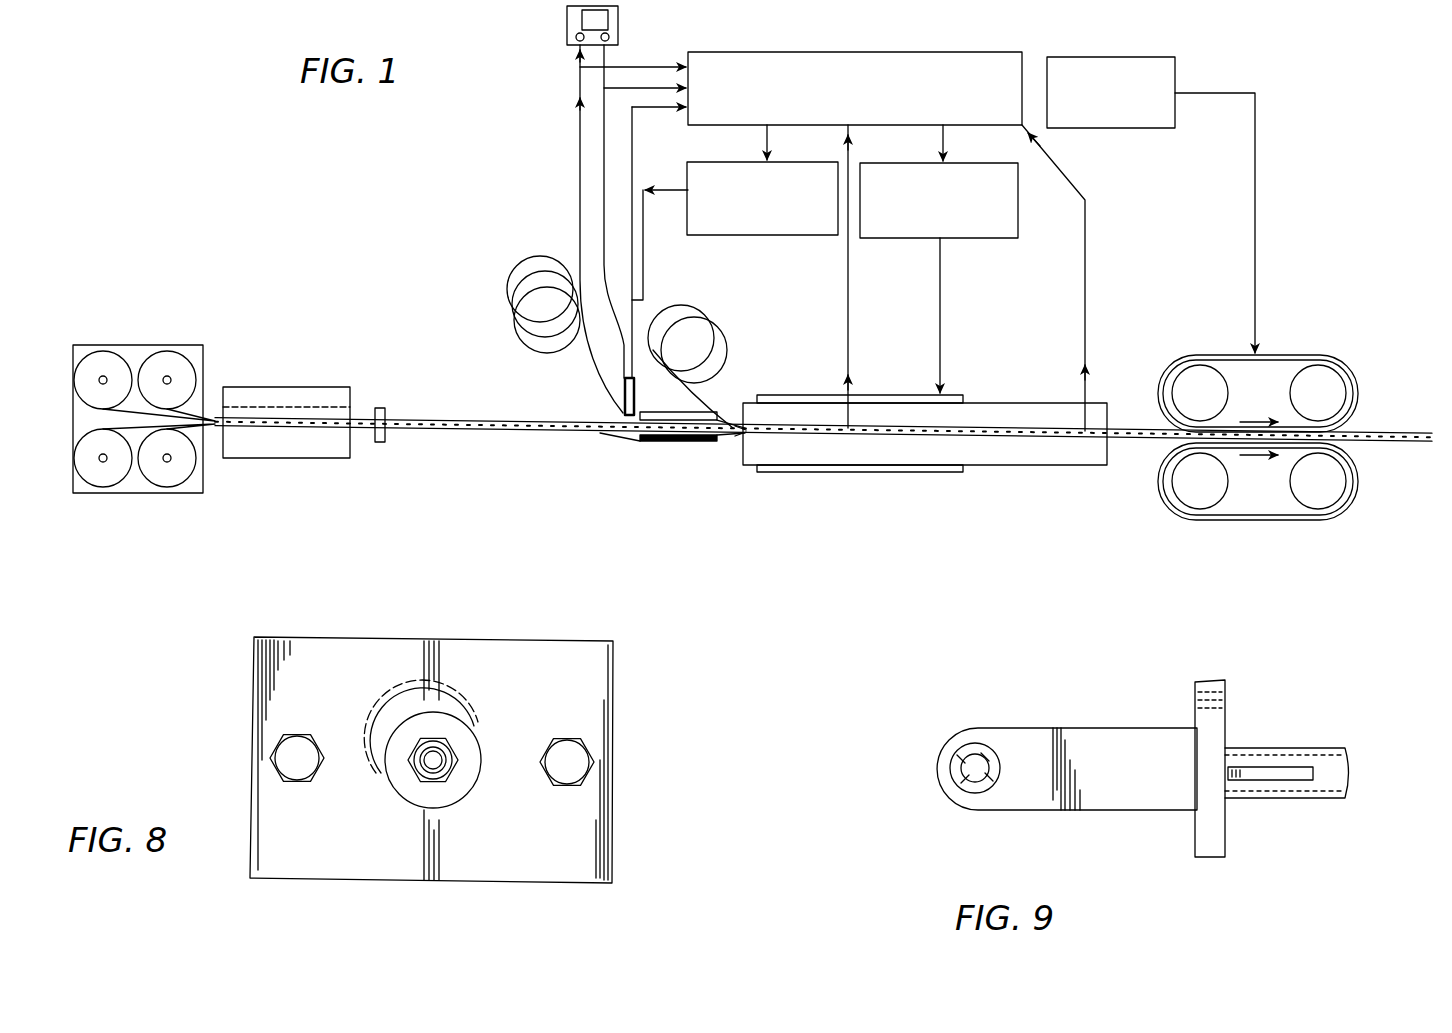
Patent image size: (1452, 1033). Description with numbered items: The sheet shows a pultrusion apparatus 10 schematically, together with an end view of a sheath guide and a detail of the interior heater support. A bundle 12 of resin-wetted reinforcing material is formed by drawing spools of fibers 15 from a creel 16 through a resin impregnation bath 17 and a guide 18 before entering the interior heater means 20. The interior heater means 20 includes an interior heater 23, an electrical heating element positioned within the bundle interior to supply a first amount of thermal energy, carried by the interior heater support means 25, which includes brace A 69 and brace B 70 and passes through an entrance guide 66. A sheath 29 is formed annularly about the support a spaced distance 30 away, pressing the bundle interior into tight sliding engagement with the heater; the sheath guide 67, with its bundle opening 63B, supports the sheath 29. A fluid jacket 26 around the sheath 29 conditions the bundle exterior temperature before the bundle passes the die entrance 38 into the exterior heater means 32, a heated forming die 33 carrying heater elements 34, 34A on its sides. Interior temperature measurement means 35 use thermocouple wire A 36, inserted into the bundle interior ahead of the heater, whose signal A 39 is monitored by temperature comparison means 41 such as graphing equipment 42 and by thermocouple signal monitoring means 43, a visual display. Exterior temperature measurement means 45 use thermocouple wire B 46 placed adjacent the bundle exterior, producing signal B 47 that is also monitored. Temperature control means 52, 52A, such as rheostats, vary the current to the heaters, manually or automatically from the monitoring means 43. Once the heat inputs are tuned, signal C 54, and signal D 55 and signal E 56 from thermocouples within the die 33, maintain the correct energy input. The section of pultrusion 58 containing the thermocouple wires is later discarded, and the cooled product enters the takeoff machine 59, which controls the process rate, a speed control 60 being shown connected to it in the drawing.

In FIG. 1, the pultrusion apparatus 10 is at (1337, 93).
In FIG. 1, the bundle 12 is at (464, 420).
In FIG. 1, the spools of fibers 15 is at (157, 487).
In FIG. 1, the creel 16 is at (147, 303).
In FIG. 1, the resin impregnation bath 17 is at (290, 387).
In FIG. 1, the guide 18 is at (383, 443).
In FIG. 1, the interior heater means 20 is at (601, 410).
In FIG. 1, the interior heater 23 is at (728, 441).
In FIG. 8, the interior heater 23 is at (455, 745).
In FIG. 8, the interior heater support means 25 is at (417, 780).
In FIG. 9, the interior heater support means 25 is at (1350, 727).
In FIG. 1, the fluid jacket 26 is at (679, 447).
In FIG. 1, the sheath 29 is at (640, 438).
In FIG. 8, the spaced distance 30 is at (421, 736).
In FIG. 1, the exterior heater means 32 is at (942, 479).
In FIG. 1, the heated forming die 33 is at (1047, 467).
In FIG. 1, the heater element 34 is at (783, 394).
In FIG. 1, the heater element 34A is at (853, 473).
In FIG. 1, the interior temperature measurement means 35 is at (450, 222).
In FIG. 1, the thermocouple wire A 36 is at (537, 258).
In FIG. 1, the furnace entrance 38 is at (752, 438).
In FIG. 1, the signal A 39 is at (579, 124).
In FIG. 1, the temperature comparison means 41 is at (562, 26).
In FIG. 1, the graphing equipment 42 is at (618, 23).
In FIG. 1, the thermocouple signal monitoring means 43 is at (978, 46).
In FIG. 1, the exterior temperature measurement means 45 is at (677, 290).
In FIG. 1, the thermocouple wire B 46 is at (705, 317).
In FIG. 1, the signal B 47 is at (620, 85).
In FIG. 1, the temperature control means 52 is at (806, 246).
In FIG. 1, the temperature control means 52A is at (1003, 248).
In FIG. 1, the signal C 54 is at (633, 148).
In FIG. 1, the signal D 55 is at (849, 349).
In FIG. 1, the signal E 56 is at (1088, 347).
In FIG. 1, the pultrusion 58 is at (1392, 431).
In FIG. 1, the takeoff machine 59 is at (1323, 357).
In FIG. 1, the speed control 60 is at (1176, 63).
In FIG. 8, the bundle opening 63B is at (468, 778).
In FIG. 9, the entrance guide 66 is at (1228, 836).
In FIG. 8, the sheath guide 67 is at (615, 682).
In FIG. 9, the brace A 69 is at (1022, 728).
In FIG. 9, the brace B 70 is at (1270, 766).